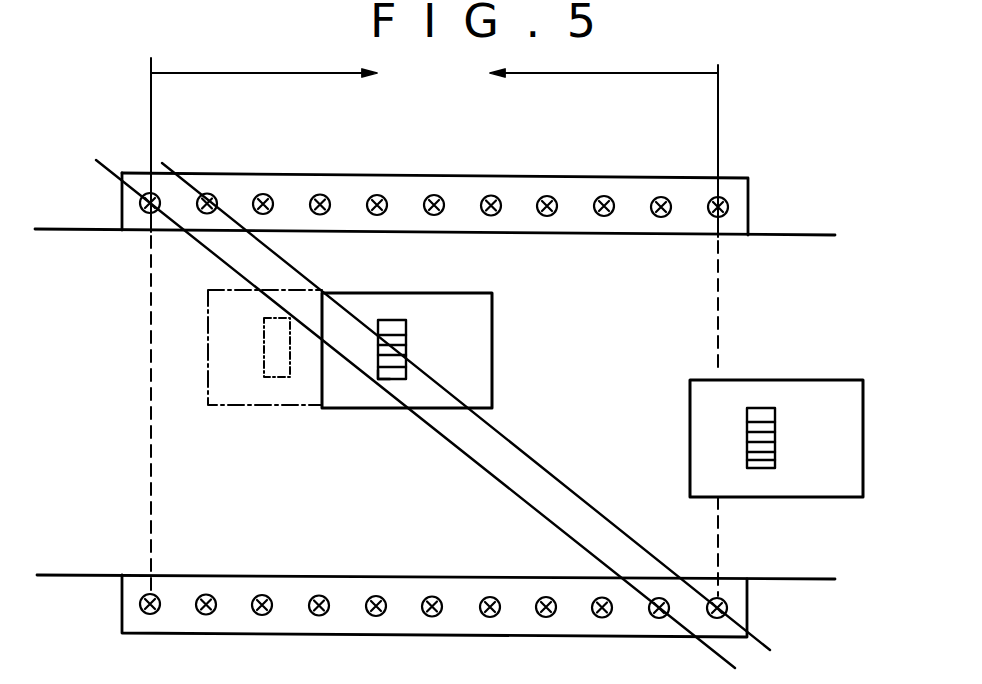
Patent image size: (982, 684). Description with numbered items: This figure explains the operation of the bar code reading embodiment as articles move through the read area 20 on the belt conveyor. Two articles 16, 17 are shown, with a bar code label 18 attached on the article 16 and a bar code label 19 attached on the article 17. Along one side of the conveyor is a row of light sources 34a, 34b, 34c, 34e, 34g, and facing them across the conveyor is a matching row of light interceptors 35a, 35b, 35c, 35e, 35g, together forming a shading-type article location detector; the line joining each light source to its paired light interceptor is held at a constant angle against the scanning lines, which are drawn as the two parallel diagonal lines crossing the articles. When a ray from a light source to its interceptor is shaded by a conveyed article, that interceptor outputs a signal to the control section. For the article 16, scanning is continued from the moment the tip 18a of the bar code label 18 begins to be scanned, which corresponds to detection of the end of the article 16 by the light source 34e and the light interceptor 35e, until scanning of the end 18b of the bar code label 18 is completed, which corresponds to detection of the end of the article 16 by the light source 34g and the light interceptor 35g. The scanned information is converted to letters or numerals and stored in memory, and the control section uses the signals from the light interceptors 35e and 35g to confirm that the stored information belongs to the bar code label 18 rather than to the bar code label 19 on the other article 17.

The article 16 is at (493, 307).
The article 17 is at (825, 380).
The bar code 18 is at (404, 345).
The tip of the bar code label 18a is at (378, 381).
The end of the bar code label 18b is at (290, 318).
The bar code 19 is at (768, 469).
The read area 20 is at (434, 73).
The light source 34a is at (729, 207).
The light source 34b is at (668, 198).
The light source 34c is at (553, 199).
The light source 34e is at (491, 196).
The light source 34g is at (380, 195).
The light interceptor 35a is at (728, 608).
The light interceptor 35b is at (661, 598).
The light interceptor 35c is at (603, 619).
The light interceptor 35e is at (490, 597).
The light interceptor 35g is at (376, 596).